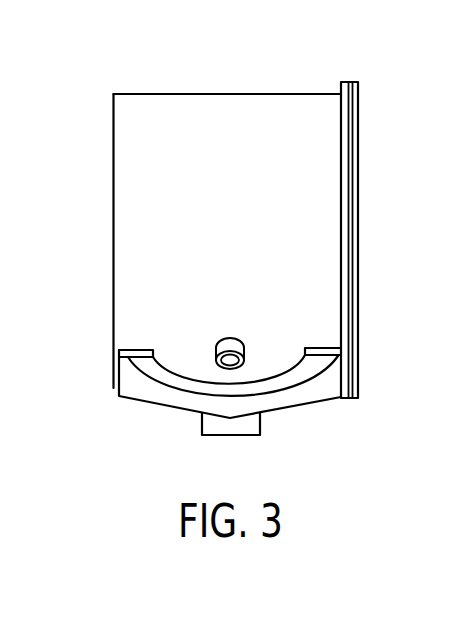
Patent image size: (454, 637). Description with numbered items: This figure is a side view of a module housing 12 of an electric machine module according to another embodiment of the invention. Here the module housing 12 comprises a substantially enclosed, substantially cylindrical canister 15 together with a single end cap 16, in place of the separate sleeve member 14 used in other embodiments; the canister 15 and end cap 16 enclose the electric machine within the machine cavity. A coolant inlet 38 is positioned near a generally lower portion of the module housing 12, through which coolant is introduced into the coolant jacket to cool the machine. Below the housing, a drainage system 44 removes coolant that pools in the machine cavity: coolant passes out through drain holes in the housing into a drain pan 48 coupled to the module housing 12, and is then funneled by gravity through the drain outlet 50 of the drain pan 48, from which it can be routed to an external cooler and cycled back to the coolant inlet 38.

The module housing 12 is at (163, 80).
The sleeve member 14 is at (295, 408).
The canister 15 is at (289, 94).
The first end cap 16 is at (359, 118).
The coolant inlet 38 is at (216, 352).
The drainage system 44 is at (319, 389).
The drain pan 48 is at (298, 370).
The drain outlet 50 is at (210, 438).